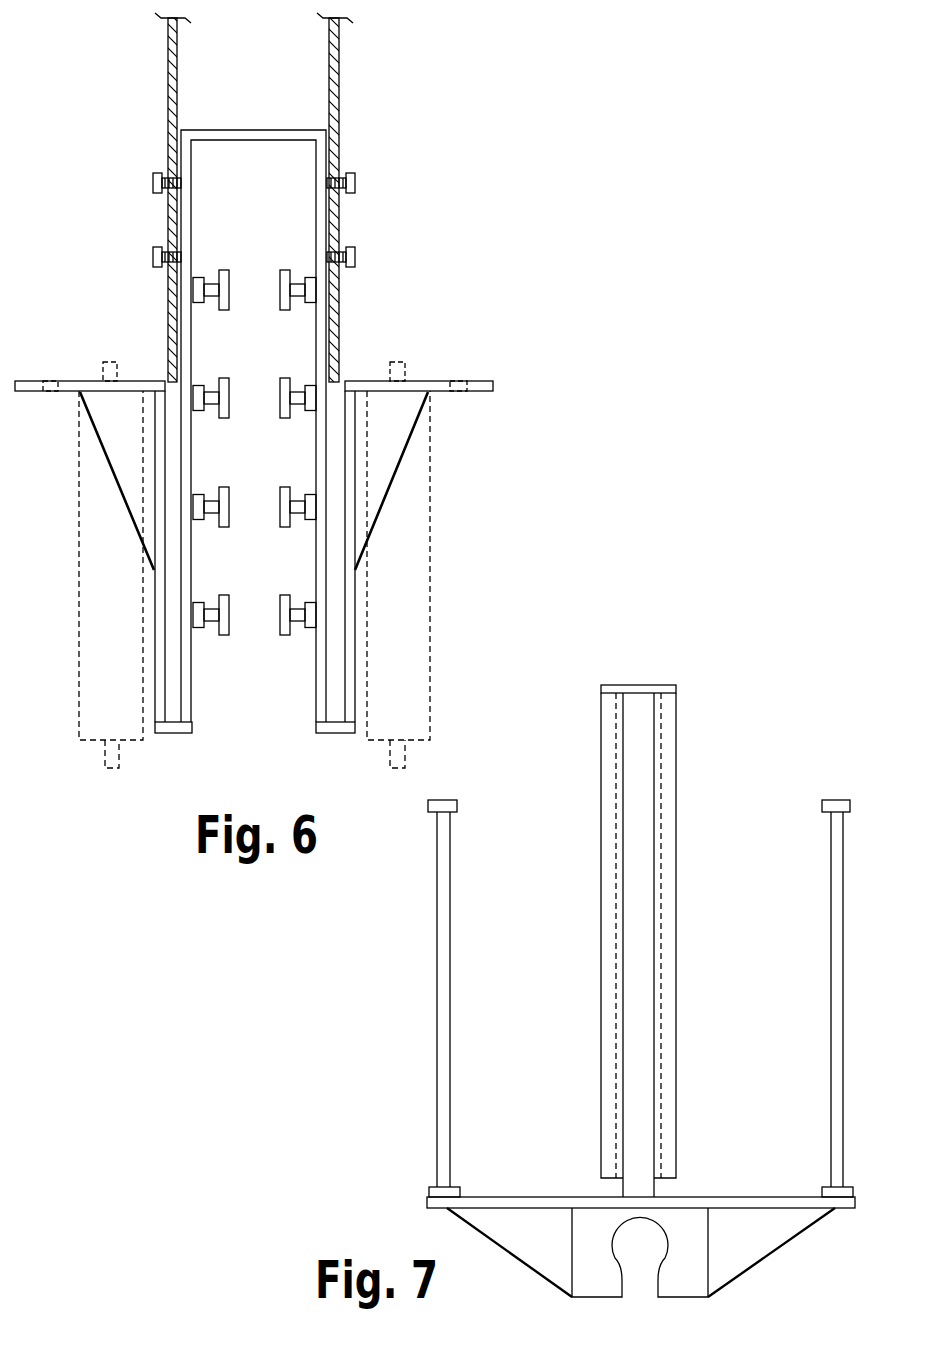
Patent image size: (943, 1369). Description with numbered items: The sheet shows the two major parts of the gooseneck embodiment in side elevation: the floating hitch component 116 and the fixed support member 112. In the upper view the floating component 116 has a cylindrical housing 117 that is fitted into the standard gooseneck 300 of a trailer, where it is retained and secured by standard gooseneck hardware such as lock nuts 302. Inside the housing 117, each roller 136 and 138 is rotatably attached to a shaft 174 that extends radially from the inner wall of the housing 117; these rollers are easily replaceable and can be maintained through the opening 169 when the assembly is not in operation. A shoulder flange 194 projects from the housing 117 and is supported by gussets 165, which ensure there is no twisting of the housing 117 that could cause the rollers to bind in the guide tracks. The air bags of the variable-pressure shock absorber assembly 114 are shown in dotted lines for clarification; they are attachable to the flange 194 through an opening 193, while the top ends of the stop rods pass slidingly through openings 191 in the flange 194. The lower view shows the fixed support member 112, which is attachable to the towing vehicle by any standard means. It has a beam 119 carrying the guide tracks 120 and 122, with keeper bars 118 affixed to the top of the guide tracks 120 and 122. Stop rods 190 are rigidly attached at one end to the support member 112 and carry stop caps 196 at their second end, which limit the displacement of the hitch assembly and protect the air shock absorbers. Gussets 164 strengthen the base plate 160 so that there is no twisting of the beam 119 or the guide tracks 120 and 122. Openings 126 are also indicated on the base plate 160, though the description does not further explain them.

In FIG. 6, the gooseneck 300 is at (345, 84).
In FIG. 6, the lock nuts 302 is at (153, 183).
In FIG. 6, the floating hitch component 116 is at (258, 122).
In FIG. 6, the cylindrical housing 117 is at (316, 200).
In FIG. 6, the shaft 174 is at (207, 282).
In FIG. 6, the roller 138 is at (226, 285).
In FIG. 6, the roller 136 is at (282, 508).
In FIG. 6, the openings 191 is at (487, 379).
In FIG. 6, the opening 193 is at (425, 379).
In FIG. 6, the shoulder flange 194 is at (83, 380).
In FIG. 6, the gussets 165 is at (108, 422).
In FIG. 6, the air bag shock absorber assembly 114 is at (78, 548).
In FIG. 6, the opening 169 is at (263, 700).
In FIG. 7, the keeper bars 118 is at (632, 685).
In FIG. 7, the guide track 120 is at (600, 795).
In FIG. 7, the guide track 122 is at (676, 797).
In FIG. 7, the beam 119 is at (627, 1190).
In FIG. 7, the stop caps 196 is at (447, 802).
In FIG. 7, the stop rods 190 is at (450, 975).
In FIG. 7, the base plate hole 126 is at (515, 1197).
In FIG. 7, the gussets 164 is at (512, 1238).
In FIG. 7, the base plate 160 is at (708, 1197).
In FIG. 7, the fixed support member 112 is at (641, 1228).